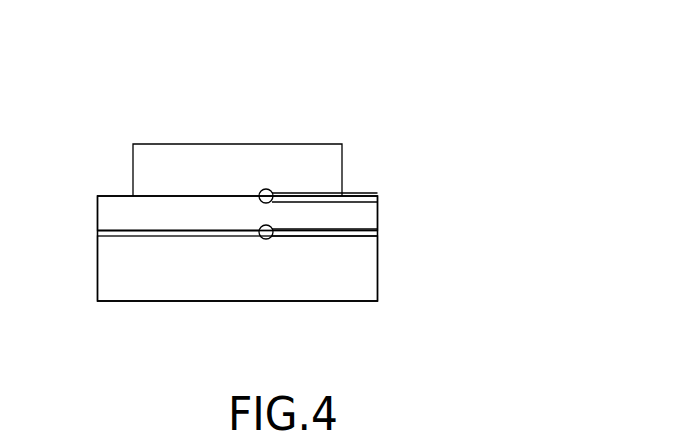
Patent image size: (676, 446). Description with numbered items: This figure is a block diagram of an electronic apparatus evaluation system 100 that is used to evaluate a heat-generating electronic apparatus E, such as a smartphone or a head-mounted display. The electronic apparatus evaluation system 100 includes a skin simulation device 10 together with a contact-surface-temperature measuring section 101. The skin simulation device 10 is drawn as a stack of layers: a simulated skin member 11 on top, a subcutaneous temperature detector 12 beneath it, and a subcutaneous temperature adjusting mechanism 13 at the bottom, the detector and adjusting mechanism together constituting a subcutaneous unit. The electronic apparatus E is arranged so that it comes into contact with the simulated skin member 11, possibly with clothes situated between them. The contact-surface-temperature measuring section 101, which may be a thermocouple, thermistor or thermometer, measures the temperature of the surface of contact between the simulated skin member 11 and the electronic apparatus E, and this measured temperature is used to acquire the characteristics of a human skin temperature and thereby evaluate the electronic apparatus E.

The electronic apparatus evaluation system 100 is at (343, 96).
The contact-surface-temperature measuring section 101 is at (354, 193).
The skin simulation device 10 is at (460, 198).
The simulated skin member 11 is at (378, 208).
The subcutaneous temperature detector 12 is at (378, 232).
The subcutaneous temperature adjusting mechanism 13 is at (378, 272).
The electronic apparatus E is at (132, 169).